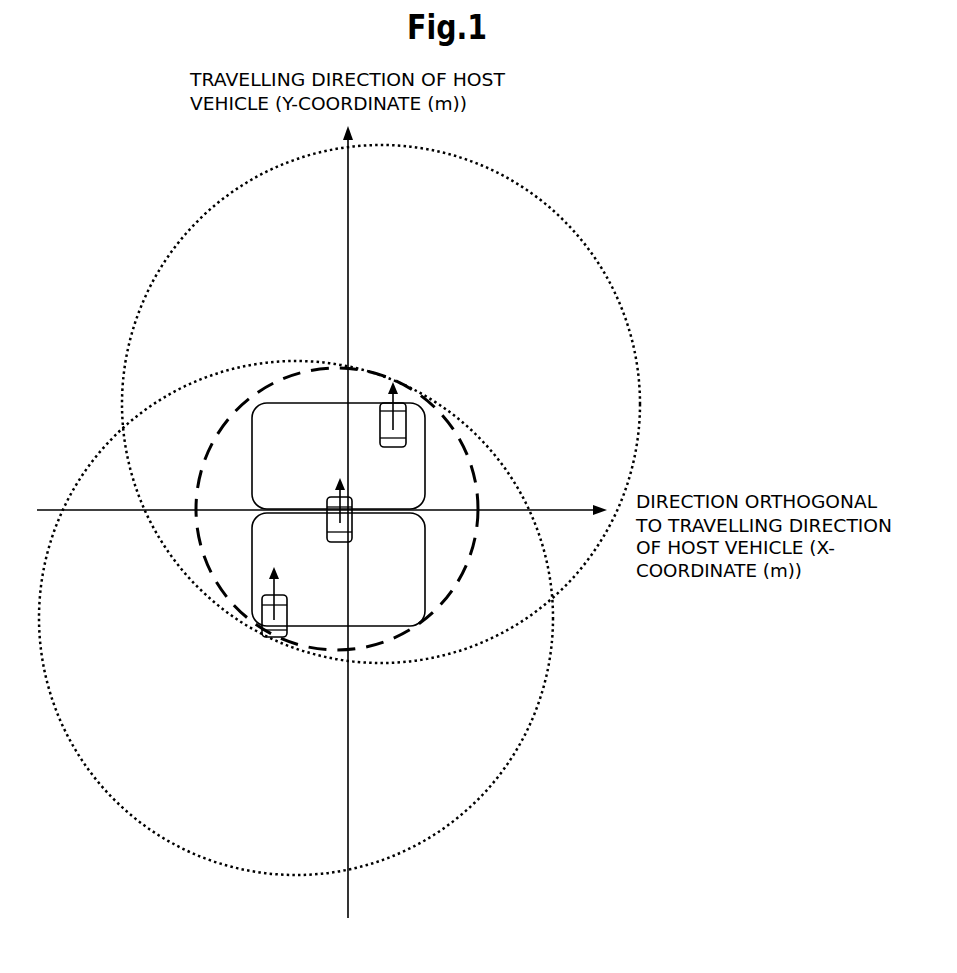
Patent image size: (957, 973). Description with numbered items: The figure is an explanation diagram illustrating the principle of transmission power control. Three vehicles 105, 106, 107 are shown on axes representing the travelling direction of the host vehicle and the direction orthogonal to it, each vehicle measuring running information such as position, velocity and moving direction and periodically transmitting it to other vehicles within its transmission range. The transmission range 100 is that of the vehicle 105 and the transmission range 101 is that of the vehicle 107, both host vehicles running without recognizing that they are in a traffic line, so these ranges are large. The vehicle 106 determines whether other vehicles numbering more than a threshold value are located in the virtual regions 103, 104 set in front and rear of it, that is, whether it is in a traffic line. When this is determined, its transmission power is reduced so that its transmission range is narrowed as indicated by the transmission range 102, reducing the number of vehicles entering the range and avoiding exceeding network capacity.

The transmission range 100 is at (628, 320).
The transmission range 101 is at (523, 737).
The narrowed transmission range 102 is at (470, 533).
The virtual region 103 is at (425, 458).
The virtual region 104 is at (425, 593).
The vehicle 105 is at (398, 414).
The vehicle 106 is at (335, 517).
The vehicle 107 is at (270, 618).